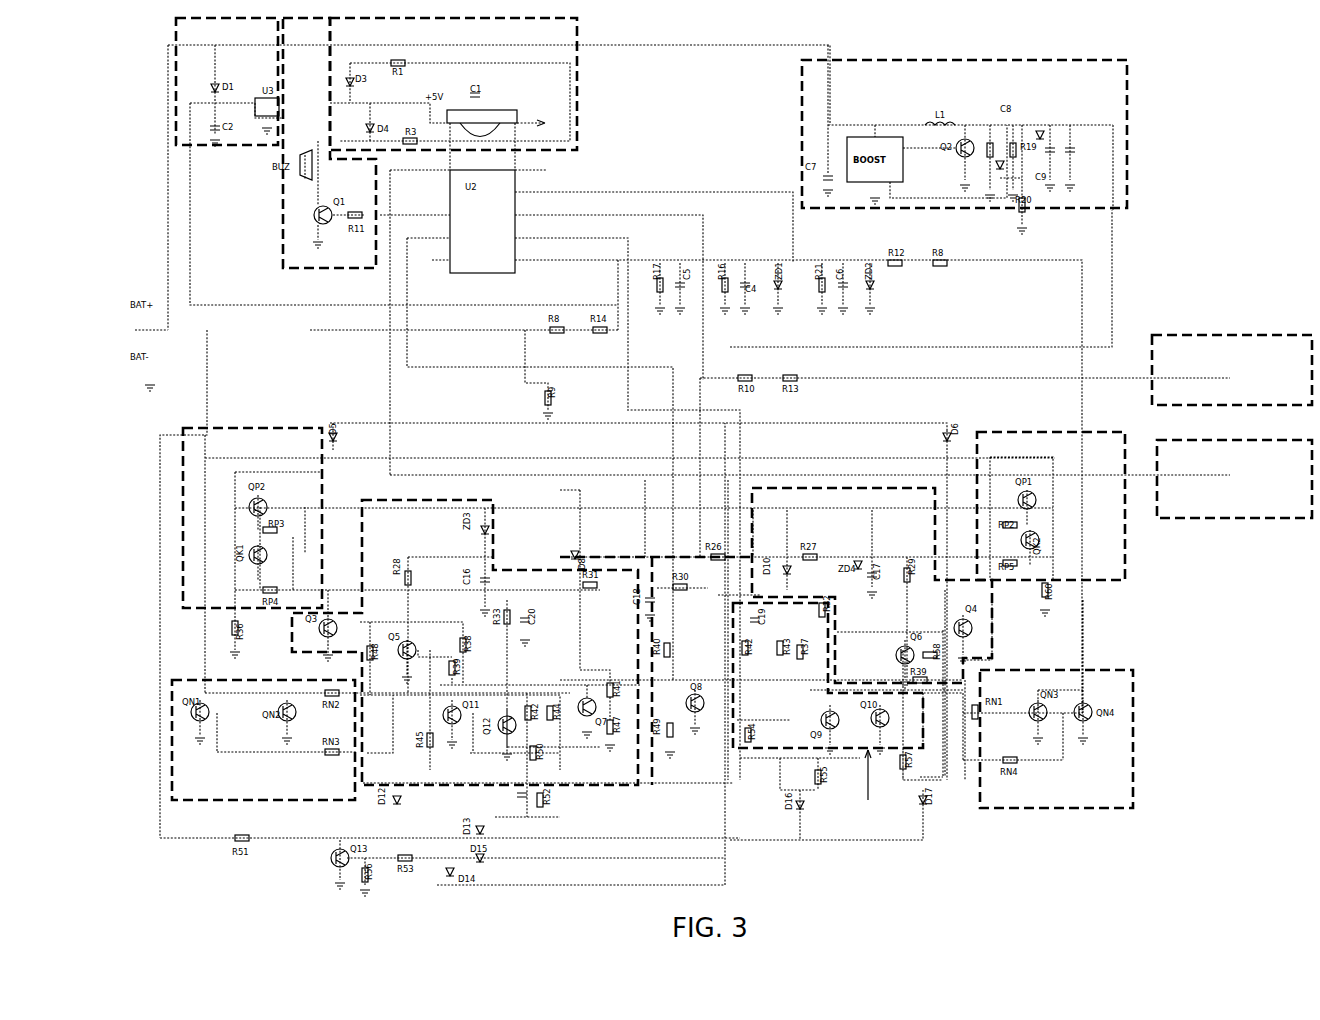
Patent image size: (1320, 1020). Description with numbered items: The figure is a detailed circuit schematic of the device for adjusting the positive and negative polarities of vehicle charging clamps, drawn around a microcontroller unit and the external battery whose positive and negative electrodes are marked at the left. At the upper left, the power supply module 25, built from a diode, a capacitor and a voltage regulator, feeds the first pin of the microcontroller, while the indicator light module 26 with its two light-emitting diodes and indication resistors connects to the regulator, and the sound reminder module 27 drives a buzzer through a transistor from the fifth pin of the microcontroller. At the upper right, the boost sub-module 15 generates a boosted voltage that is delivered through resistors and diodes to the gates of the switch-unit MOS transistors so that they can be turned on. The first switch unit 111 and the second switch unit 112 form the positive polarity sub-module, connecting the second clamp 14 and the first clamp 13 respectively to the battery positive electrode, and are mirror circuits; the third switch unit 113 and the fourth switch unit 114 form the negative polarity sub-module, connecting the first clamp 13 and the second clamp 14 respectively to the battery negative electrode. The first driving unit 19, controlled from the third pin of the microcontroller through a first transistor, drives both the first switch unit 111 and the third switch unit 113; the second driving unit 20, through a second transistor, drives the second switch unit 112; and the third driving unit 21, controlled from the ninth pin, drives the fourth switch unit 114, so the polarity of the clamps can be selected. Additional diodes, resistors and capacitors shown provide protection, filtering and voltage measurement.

The power supply module 25 is at (172, 22).
The indicator light module 26 is at (453, 84).
The sound reminder module 27 is at (281, 203).
The boost sub-module 15 is at (964, 134).
The first clamp 13 is at (1232, 370).
The second clamp 14 is at (1234, 479).
The first switch unit 111 is at (272, 426).
The second switch unit 112 is at (1127, 535).
The third switch unit 113 is at (170, 806).
The fourth switch unit 114 is at (1137, 745).
The first driving unit 19 is at (446, 496).
The second driving unit 20 is at (836, 486).
The third driving unit 21 is at (828, 707).